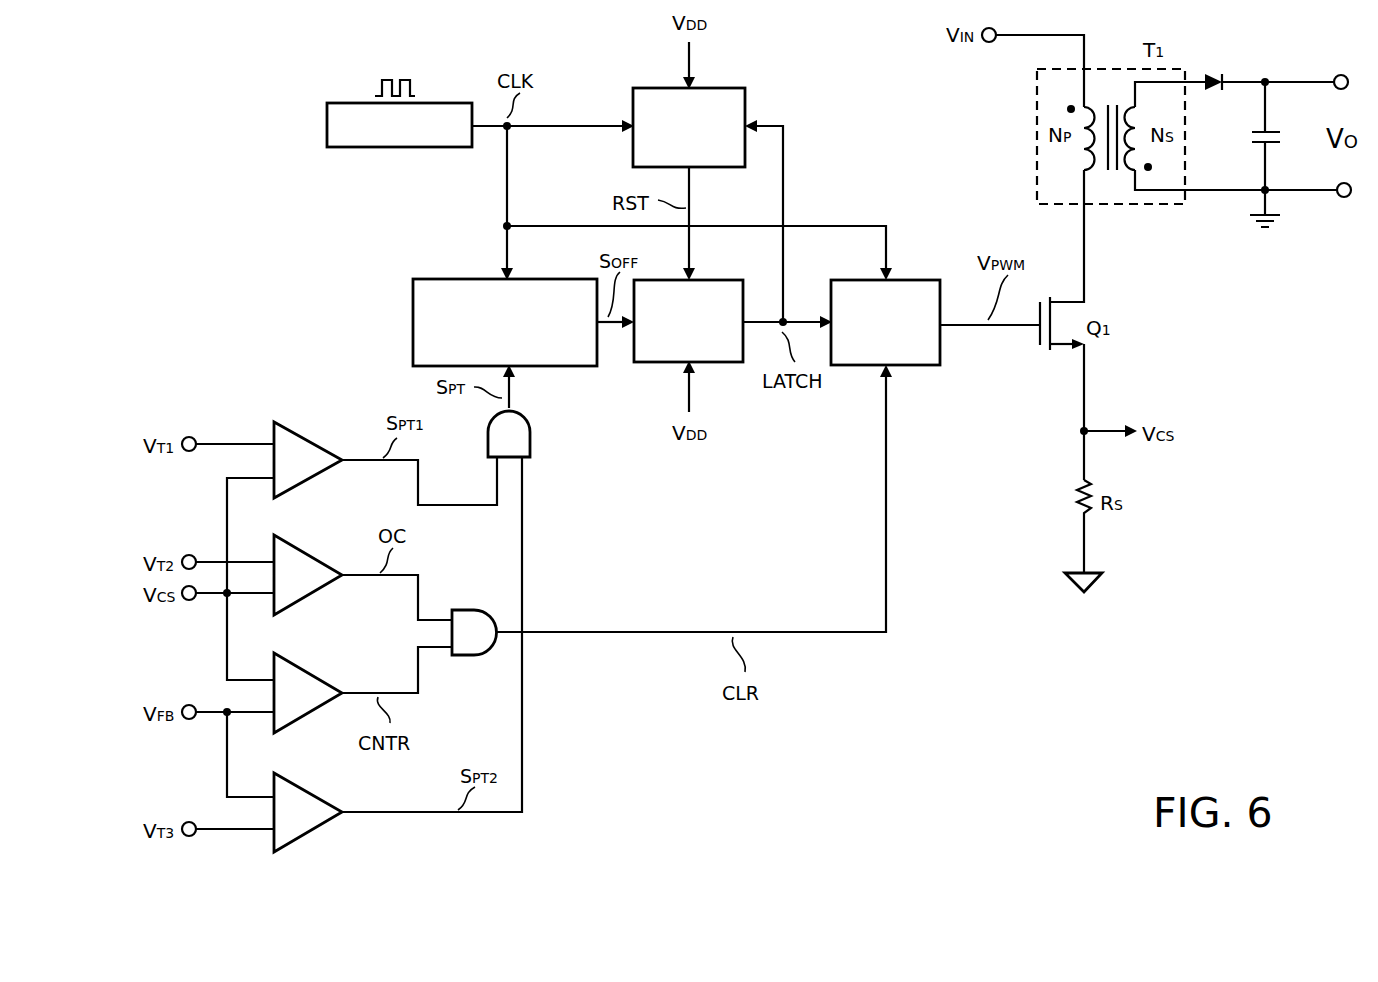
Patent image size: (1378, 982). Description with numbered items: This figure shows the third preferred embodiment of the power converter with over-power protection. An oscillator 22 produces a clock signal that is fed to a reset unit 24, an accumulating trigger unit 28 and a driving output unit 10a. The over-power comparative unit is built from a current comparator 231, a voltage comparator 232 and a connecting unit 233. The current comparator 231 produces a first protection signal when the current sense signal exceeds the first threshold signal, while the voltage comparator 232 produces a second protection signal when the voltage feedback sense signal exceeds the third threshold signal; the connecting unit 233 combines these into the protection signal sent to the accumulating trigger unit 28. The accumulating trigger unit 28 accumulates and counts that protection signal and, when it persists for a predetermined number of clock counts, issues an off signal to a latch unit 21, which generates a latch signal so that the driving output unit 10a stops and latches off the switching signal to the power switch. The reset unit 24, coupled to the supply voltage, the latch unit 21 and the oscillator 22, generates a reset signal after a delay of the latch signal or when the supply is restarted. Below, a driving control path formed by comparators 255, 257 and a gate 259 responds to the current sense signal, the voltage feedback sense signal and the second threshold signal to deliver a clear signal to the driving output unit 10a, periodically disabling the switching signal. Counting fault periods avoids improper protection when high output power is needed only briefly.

The oscillator 22 is at (440, 103).
The reset unit 24 is at (712, 88).
The accumulating trigger unit 28 is at (470, 279).
The latch unit 21 is at (732, 368).
The driving output unit 10a is at (920, 280).
The current comparator 231 is at (310, 432).
The over-current comparator 255 is at (310, 548).
The feedback comparator 257 is at (310, 668).
The voltage comparator 232 is at (310, 788).
The connecting unit 233 is at (536, 440).
The AND gate 259 is at (470, 612).